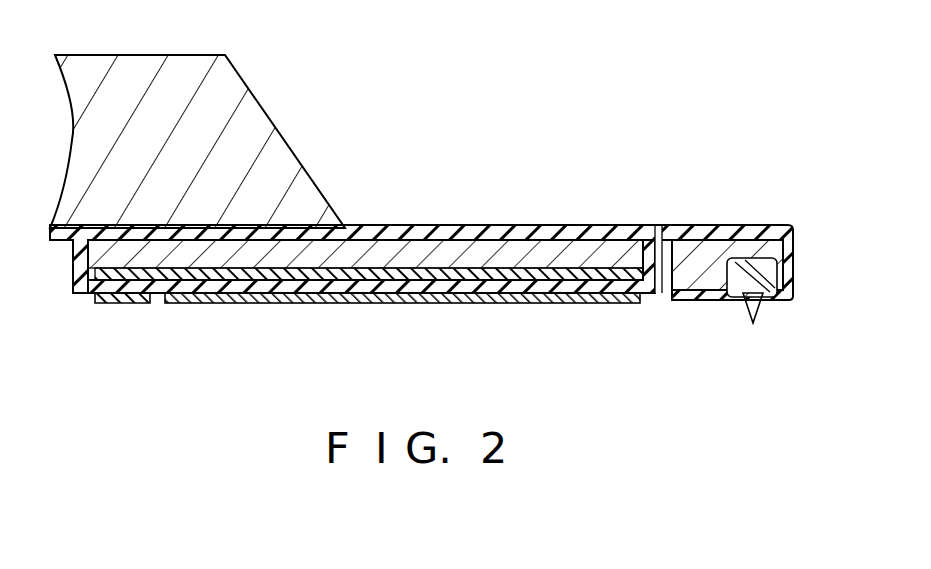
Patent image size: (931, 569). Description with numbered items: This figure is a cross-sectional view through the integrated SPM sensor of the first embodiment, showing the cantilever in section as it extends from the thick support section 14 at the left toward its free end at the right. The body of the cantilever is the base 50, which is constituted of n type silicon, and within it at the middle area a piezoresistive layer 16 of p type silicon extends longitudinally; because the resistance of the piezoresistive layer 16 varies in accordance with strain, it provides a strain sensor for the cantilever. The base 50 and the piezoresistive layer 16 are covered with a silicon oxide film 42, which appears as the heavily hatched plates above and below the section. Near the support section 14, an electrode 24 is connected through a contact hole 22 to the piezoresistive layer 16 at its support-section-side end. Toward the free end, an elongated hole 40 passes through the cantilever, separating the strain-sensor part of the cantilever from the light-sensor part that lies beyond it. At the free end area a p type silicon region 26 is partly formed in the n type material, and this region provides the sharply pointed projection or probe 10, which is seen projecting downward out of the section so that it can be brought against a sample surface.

The probe 10 is at (758, 307).
The support section 14 is at (278, 148).
The piezoresistive layer 16 is at (505, 304).
The contact hole 22 is at (376, 303).
The electrode 24 is at (100, 303).
The p type silicon region 26 is at (792, 272).
The elongated hole 40 is at (657, 226).
The silicon oxide film 42 is at (482, 226).
The base 50 is at (594, 240).